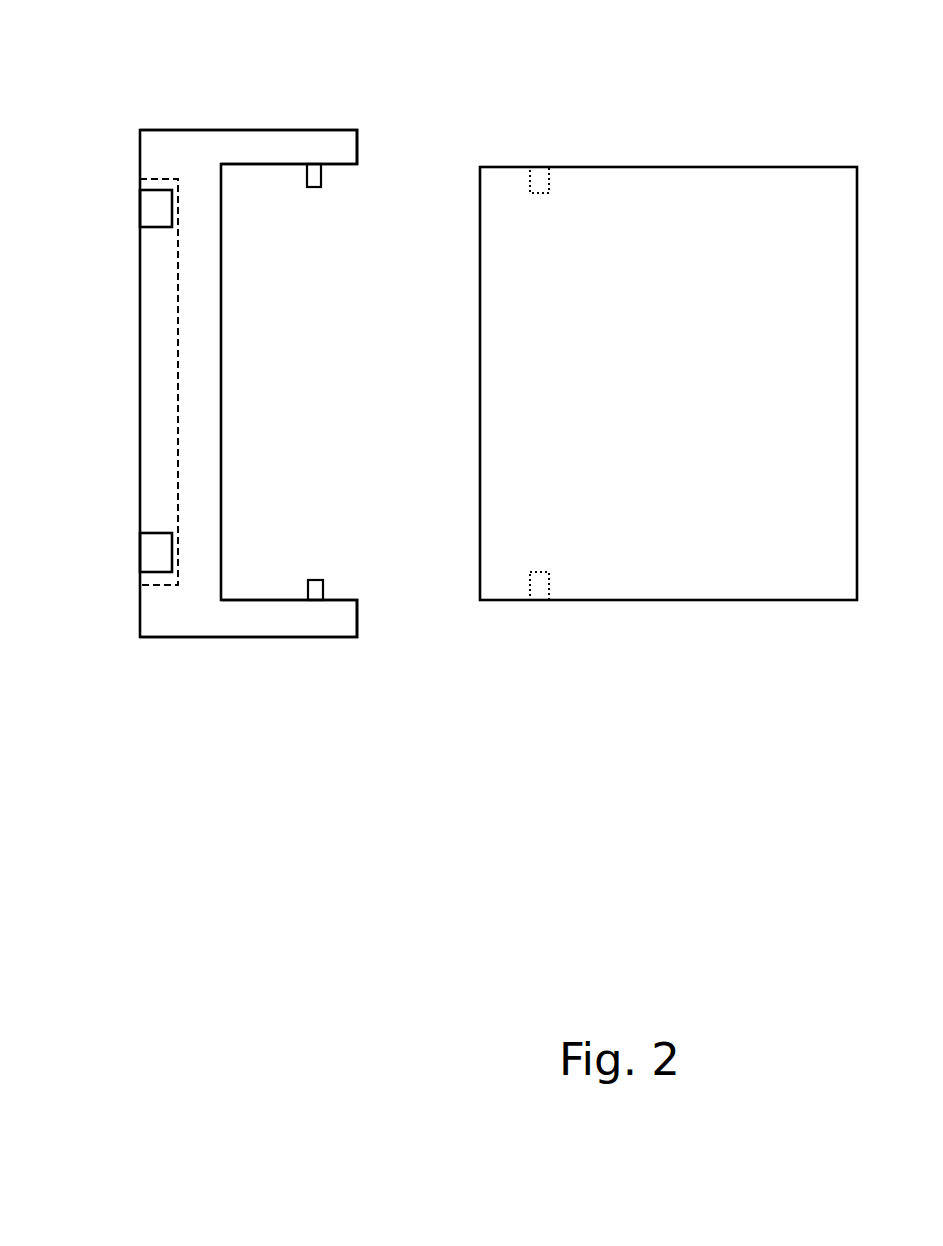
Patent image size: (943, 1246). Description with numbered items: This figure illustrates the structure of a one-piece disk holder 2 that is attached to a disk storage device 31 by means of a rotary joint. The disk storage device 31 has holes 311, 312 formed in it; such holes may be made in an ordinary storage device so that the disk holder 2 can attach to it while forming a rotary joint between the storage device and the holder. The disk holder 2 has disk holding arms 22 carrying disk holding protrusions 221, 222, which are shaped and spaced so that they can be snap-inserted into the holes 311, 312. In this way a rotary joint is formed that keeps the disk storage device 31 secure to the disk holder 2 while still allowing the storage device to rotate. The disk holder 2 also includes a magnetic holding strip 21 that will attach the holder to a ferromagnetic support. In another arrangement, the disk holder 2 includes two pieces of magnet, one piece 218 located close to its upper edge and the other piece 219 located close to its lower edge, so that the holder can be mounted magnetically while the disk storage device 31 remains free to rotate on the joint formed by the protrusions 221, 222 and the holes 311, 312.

The disk holder 2 is at (172, 129).
The disk holding arms 22 is at (278, 140).
The magnetic holding strip 21 is at (165, 373).
The piece of magnet 218 is at (148, 196).
The piece of magnet 219 is at (155, 540).
The disk holding protrusion 221 is at (313, 173).
The disk holding protrusion 222 is at (315, 590).
The disk storage device 31 is at (763, 200).
The hole 311 is at (540, 183).
The hole 312 is at (540, 586).